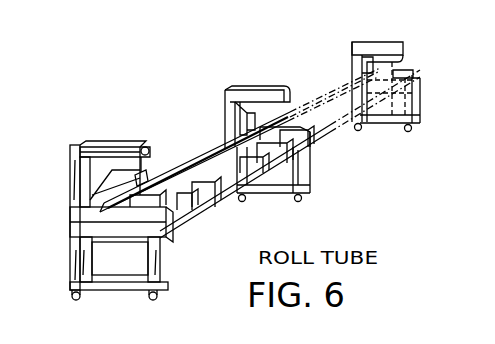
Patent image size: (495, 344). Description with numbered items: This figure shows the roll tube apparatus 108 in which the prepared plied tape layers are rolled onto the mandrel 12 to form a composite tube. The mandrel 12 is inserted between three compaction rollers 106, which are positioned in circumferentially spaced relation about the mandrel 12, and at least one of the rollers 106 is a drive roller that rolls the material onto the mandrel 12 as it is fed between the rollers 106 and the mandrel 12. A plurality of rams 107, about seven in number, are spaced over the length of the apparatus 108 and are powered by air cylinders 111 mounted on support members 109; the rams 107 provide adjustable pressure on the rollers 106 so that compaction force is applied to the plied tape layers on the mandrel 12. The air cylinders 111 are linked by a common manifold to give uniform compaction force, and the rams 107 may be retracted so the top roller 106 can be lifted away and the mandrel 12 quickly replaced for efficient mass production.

The mandrel 12 is at (136, 180).
The compaction rollers 106 is at (138, 195).
The rams 107 is at (156, 138).
The apparatus 108 is at (270, 86).
The support members 109 is at (82, 145).
The air cylinders 111 is at (134, 148).